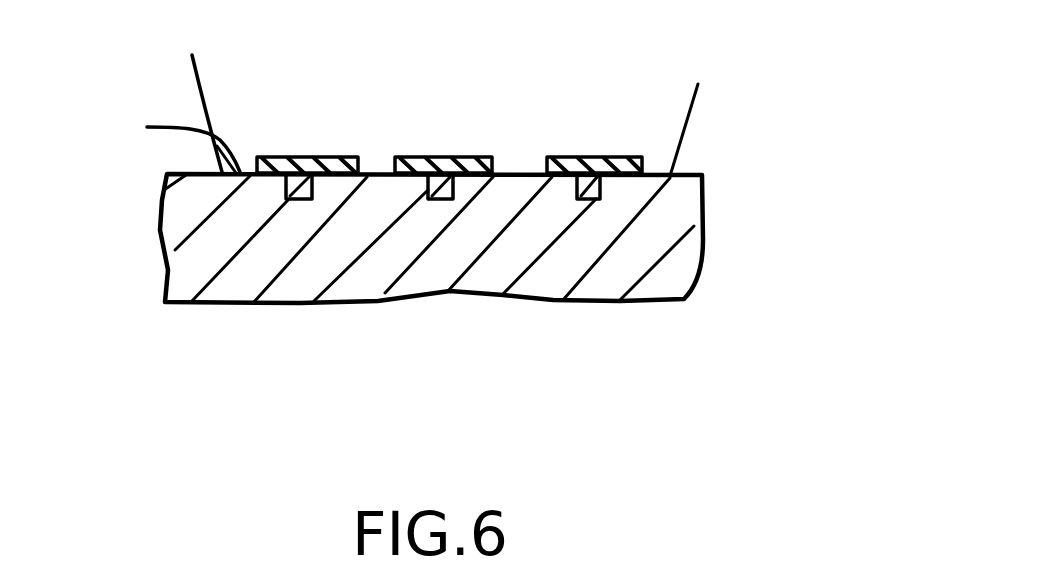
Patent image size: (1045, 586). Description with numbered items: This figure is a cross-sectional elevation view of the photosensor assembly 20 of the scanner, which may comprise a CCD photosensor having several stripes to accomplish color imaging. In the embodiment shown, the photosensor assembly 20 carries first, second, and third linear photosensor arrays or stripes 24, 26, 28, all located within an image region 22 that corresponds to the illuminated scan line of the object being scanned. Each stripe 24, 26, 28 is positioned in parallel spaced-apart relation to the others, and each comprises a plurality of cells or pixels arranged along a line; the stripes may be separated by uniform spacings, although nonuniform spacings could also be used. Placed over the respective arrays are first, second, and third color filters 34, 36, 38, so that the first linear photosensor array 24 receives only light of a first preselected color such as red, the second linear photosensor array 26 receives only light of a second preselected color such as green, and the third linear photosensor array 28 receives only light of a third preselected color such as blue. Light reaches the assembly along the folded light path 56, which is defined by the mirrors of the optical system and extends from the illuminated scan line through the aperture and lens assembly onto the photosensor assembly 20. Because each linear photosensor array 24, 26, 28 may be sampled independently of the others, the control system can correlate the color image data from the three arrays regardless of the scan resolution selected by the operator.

The photosensor assembly 20 is at (673, 212).
The image region 22 is at (148, 141).
The first linear photosensor array 24 is at (303, 200).
The second linear photosensor array 26 is at (442, 198).
The third linear photosensor array 28 is at (590, 200).
The first color filter 34 is at (305, 157).
The second color filter 36 is at (443, 157).
The third color filter 38 is at (592, 157).
The folded light path 56 is at (267, 88).